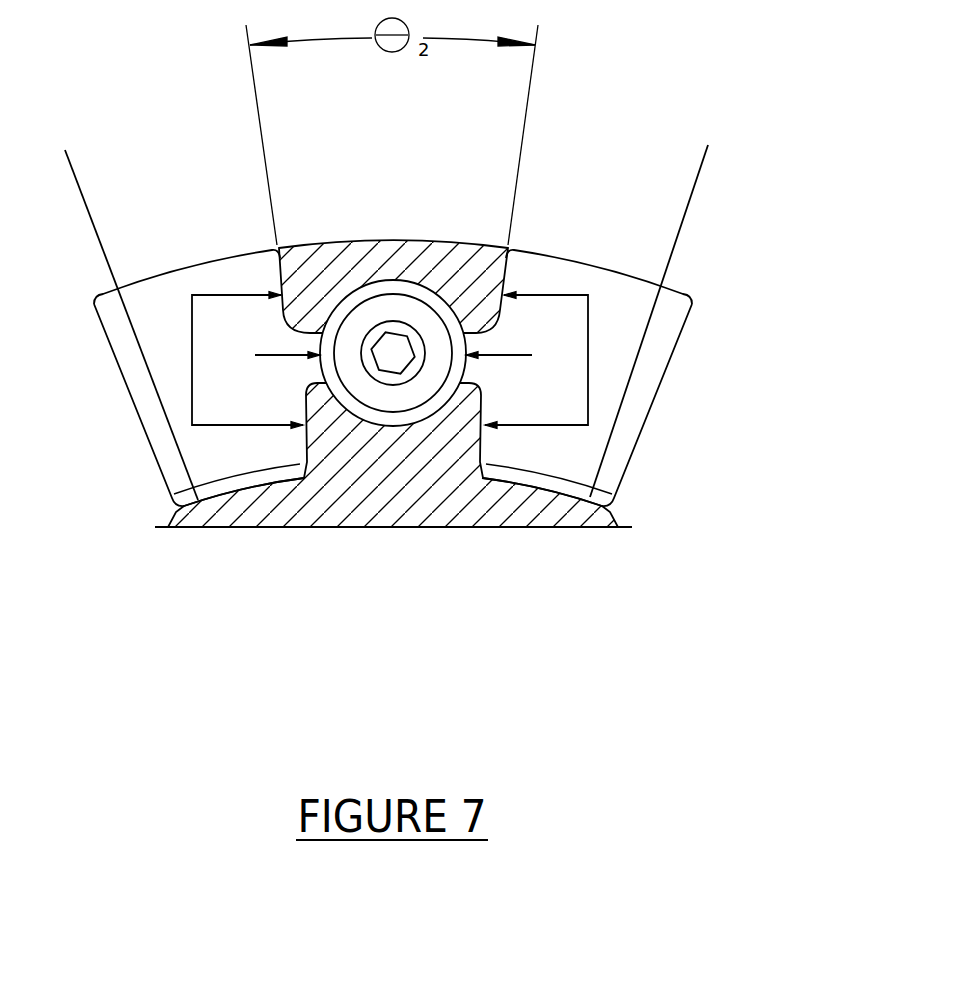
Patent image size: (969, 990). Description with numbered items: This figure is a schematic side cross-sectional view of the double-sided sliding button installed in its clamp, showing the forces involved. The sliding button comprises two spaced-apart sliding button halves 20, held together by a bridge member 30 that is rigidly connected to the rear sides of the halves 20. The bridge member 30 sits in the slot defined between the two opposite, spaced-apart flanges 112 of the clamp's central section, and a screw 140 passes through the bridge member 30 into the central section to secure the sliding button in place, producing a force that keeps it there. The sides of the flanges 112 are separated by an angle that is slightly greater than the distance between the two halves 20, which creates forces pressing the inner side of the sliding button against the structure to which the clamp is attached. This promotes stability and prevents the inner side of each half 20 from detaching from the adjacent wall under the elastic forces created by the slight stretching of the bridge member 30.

The sliding button half 20 is at (663, 335).
The bridge member 30 is at (308, 370).
The flange 112 is at (442, 268).
The screw 140 is at (405, 393).